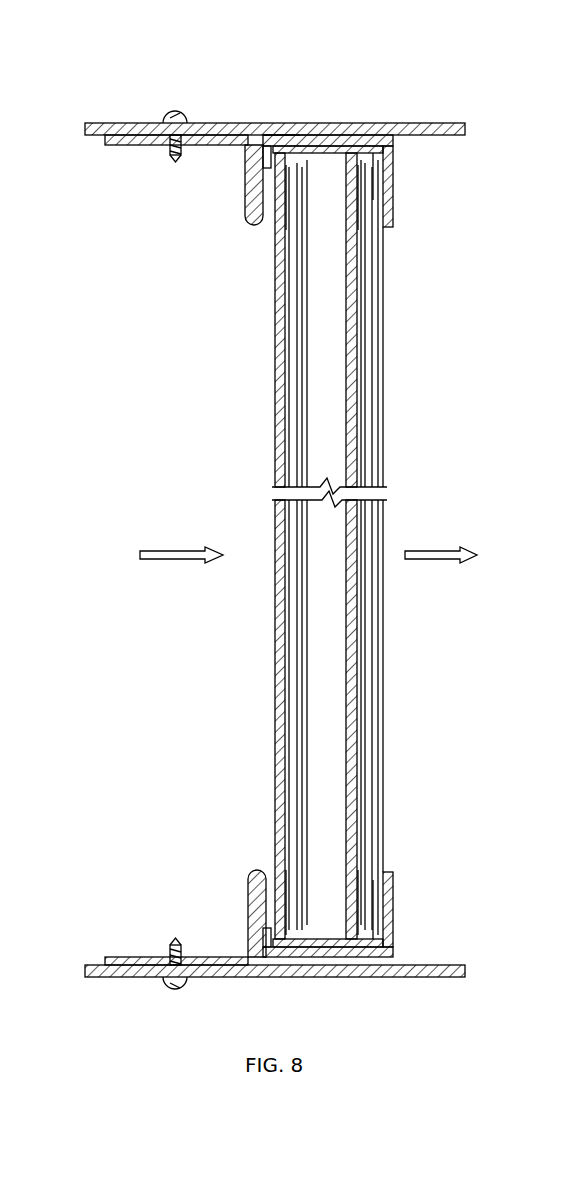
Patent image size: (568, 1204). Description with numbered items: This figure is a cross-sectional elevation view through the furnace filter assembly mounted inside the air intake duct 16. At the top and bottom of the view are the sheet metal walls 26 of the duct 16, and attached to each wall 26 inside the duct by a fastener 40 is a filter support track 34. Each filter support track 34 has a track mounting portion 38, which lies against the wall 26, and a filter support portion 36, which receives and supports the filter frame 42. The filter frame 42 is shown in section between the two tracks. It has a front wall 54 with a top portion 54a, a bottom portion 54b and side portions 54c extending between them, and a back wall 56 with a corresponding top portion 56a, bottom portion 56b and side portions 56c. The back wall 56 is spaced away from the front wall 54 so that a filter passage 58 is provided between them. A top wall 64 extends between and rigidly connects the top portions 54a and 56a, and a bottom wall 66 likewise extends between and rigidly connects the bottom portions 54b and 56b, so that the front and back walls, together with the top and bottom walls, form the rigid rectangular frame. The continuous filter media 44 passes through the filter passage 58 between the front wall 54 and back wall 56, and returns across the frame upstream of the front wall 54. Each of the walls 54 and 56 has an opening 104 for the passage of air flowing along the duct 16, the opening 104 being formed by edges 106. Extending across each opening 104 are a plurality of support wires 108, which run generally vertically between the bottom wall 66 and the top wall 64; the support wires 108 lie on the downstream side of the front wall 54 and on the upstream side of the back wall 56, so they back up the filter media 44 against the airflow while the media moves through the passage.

The air intake duct 16 is at (90, 120).
The second pair of spaced apart walls 26 is at (435, 123).
The filter support track 34 is at (240, 147).
The filter support portion 36 is at (395, 207).
The track mounting portion 38 is at (150, 147).
The fastener 40 is at (170, 110).
The filter frame 42 is at (283, 136).
The filter media 44 is at (348, 440).
The front wall 54 is at (285, 600).
The top portion of front wall 54a is at (295, 166).
The bottom portion of front wall 54b is at (287, 920).
The side portion of front wall 54c is at (290, 650).
The back wall 56 is at (383, 420).
The top portion of back wall 56a is at (378, 173).
The bottom portion of back wall 56b is at (398, 917).
The side portion of back wall 56c is at (385, 735).
The filter passage 58 is at (328, 677).
The top wall 64 is at (358, 135).
The bottom wall 66 is at (350, 956).
The opening 104 is at (283, 335).
The edge 106 is at (378, 193).
The support wire 108 is at (368, 580).